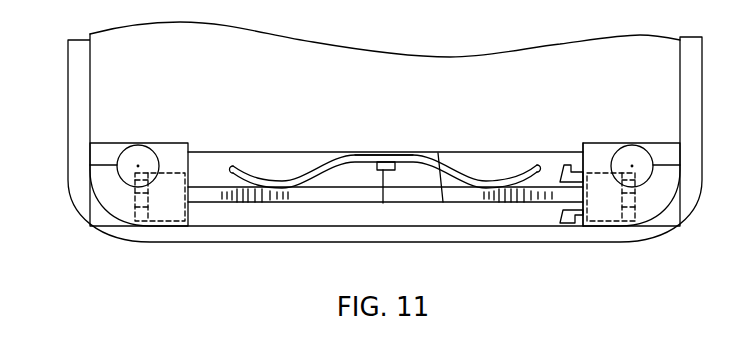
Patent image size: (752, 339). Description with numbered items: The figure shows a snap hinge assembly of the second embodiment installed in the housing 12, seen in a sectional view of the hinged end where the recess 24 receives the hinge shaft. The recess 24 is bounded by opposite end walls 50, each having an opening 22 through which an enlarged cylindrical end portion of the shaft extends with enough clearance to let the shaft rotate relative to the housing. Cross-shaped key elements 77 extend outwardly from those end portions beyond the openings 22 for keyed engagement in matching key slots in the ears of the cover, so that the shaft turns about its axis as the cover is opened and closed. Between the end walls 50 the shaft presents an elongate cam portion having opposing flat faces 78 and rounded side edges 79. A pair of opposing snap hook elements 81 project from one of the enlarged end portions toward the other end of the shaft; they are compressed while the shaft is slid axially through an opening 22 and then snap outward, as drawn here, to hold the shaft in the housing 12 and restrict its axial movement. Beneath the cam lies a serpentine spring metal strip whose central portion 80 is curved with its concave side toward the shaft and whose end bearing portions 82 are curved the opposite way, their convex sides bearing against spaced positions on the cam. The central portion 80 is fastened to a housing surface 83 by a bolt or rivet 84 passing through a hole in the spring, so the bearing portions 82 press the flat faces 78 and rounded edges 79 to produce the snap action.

The housing 12 is at (68, 86).
The openings 22 is at (587, 170).
The recess 24 is at (236, 156).
The end walls 50 is at (190, 154).
The key elements 77 is at (135, 197).
The flat faces 78 is at (347, 187).
The rounded side edges 79 is at (245, 203).
The central portion 80 is at (410, 153).
The snap hook elements 81 is at (560, 173).
The end bearing portions 82 is at (281, 180).
The housing surface 83 is at (443, 202).
The bolt or rivet 84 is at (383, 203).